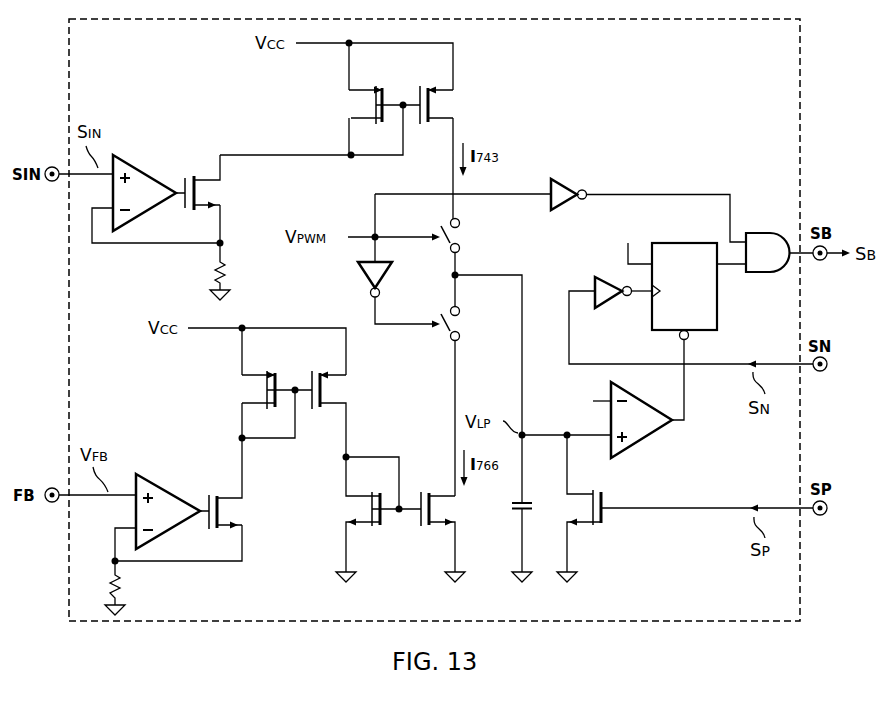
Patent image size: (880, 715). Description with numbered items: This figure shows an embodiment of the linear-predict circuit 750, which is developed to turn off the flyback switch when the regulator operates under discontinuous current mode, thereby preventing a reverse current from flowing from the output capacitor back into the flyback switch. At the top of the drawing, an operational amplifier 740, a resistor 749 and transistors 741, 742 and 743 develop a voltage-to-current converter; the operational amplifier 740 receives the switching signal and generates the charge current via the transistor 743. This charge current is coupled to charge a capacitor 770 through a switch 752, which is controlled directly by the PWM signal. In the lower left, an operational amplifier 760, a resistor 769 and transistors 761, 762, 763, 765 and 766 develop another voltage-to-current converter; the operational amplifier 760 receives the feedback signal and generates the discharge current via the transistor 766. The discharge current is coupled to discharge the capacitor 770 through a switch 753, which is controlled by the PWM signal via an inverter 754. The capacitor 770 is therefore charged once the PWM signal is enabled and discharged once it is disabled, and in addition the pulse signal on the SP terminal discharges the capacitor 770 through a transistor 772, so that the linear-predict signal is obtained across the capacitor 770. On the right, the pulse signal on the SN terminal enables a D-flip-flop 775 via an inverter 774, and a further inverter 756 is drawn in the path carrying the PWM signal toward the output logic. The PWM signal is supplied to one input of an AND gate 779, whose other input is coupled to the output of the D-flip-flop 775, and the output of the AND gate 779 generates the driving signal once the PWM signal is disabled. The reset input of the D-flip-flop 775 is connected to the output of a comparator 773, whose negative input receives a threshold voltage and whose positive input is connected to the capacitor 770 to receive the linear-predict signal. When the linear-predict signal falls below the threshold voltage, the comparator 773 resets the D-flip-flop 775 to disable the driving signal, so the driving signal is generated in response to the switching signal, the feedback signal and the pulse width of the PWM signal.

The operational amplifier 740 is at (150, 168).
The transistor 741 is at (228, 197).
The transistor 742 is at (350, 107).
The transistor 743 is at (456, 104).
The resistor 749 is at (226, 270).
The linear-predict circuit 750 is at (805, 58).
The switch 752 is at (462, 233).
The switch 753 is at (462, 321).
The inverter 754 is at (357, 278).
The inverter 756 is at (566, 180).
The operational amplifier 760 is at (164, 489).
The transistor 761 is at (241, 515).
The transistor 762 is at (243, 393).
The transistor 763 is at (348, 388).
The transistor 765 is at (346, 507).
The transistor 766 is at (427, 533).
The resistor 769 is at (124, 583).
The capacitor 770 is at (530, 515).
The transistor 772 is at (597, 530).
The comparator 773 is at (648, 442).
The inverter 774 is at (613, 305).
The D-flip-flop 775 is at (718, 313).
The AND gate 779 is at (758, 230).